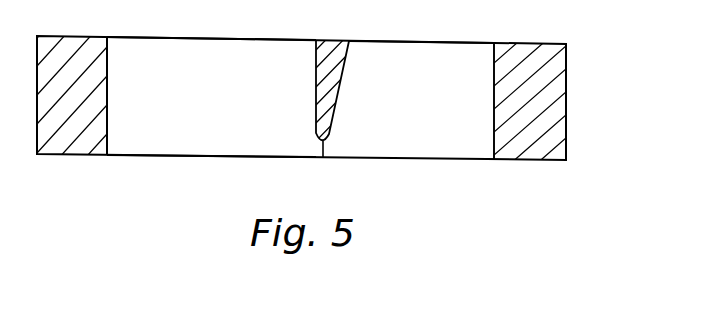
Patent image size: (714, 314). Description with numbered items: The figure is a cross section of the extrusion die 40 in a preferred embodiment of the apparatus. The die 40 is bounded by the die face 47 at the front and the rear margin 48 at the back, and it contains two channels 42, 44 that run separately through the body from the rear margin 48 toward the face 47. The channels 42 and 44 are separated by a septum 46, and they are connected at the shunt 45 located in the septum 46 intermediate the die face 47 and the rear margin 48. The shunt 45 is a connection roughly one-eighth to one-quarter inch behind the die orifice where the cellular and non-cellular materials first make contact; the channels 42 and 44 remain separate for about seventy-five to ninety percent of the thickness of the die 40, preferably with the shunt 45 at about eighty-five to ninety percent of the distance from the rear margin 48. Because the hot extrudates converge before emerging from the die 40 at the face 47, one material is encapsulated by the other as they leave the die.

The die 40 is at (553, 69).
The channel 42 is at (182, 48).
The channel 44 is at (417, 53).
The shunt 45 is at (323, 157).
The septum 46 is at (331, 42).
The die face 47 is at (187, 156).
The rear margin 48 is at (242, 36).